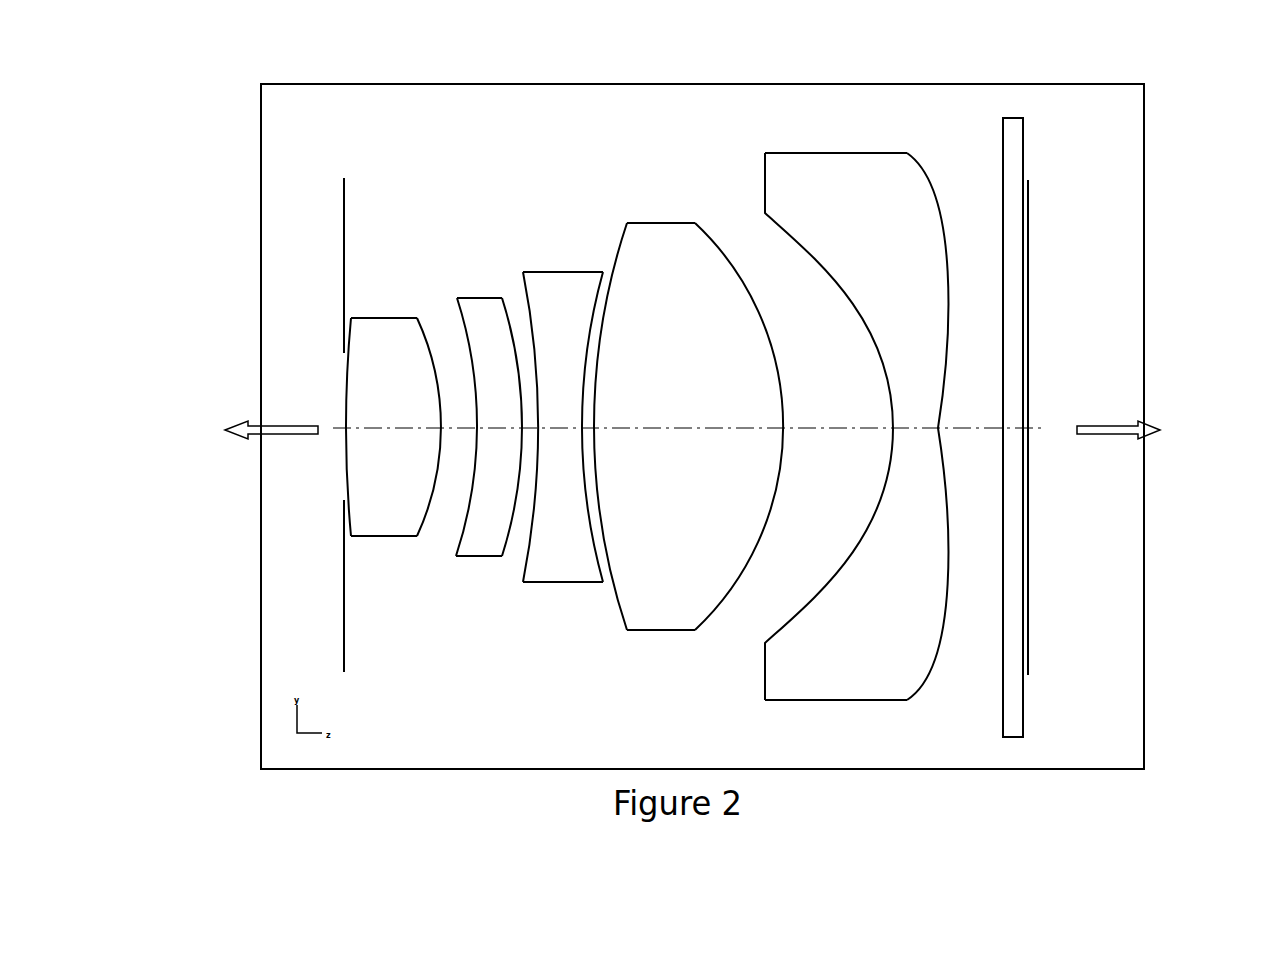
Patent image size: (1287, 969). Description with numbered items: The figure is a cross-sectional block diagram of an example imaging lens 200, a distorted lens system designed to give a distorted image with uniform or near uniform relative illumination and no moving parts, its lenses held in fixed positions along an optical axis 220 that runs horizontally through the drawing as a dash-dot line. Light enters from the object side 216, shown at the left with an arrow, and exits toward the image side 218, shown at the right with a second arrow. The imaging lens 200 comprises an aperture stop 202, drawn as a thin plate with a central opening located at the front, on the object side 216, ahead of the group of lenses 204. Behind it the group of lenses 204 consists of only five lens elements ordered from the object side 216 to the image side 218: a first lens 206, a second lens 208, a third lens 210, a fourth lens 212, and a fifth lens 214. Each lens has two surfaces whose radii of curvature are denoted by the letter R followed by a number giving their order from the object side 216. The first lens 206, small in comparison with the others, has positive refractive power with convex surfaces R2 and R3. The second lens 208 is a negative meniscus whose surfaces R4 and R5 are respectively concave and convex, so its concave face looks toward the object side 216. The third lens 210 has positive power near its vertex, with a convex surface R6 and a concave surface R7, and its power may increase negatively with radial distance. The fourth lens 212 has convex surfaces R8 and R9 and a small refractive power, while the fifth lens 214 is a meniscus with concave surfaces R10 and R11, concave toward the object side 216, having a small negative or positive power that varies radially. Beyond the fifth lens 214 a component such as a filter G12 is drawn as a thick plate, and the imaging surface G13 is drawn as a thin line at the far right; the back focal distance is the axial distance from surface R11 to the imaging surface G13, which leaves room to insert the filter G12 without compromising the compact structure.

The imaging lens 200 is at (1061, 70).
The aperture stop 202 is at (345, 672).
The group of lenses 204 is at (475, 96).
The first lens 206 is at (393, 442).
The second lens 208 is at (491, 432).
The third lens 210 is at (567, 417).
The fourth lens 212 is at (688, 437).
The fifth lens 214 is at (856, 423).
The object side 216 is at (211, 417).
The image side 218 is at (1180, 417).
The optical axis 220 is at (377, 426).
The surface R2 is at (357, 465).
The surface R3 is at (422, 483).
The surface R4 is at (480, 470).
The surface R5 is at (523, 502).
The surface R6 is at (546, 483).
The surface R7 is at (580, 517).
The surface R8 is at (607, 522).
The surface R9 is at (742, 572).
The surface R10 is at (828, 587).
The surface R11 is at (920, 572).
The filter G12 is at (986, 431).
The imaging surface G13 is at (1055, 458).